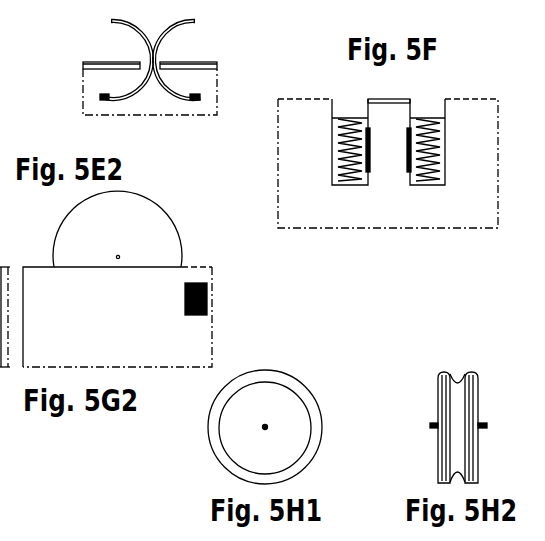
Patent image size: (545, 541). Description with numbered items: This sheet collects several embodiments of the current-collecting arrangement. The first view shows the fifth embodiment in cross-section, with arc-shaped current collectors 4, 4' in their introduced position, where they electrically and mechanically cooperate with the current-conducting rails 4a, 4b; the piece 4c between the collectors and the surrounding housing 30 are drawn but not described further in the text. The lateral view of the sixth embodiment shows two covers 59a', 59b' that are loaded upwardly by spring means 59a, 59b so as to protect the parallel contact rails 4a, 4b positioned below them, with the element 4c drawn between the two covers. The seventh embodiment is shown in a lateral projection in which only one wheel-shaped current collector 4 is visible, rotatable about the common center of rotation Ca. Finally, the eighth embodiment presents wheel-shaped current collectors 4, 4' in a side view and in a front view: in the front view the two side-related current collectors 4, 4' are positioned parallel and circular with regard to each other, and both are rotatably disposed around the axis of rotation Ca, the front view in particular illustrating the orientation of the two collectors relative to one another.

In FIG. 5E2, the current collector 4 is at (118, 50).
In FIG. 5G2, the current collector 4 is at (135, 229).
In FIG. 5H1, the current collector 4 is at (256, 430).
In FIG. 5H2, the current collector 4 is at (437, 414).
In FIG. 5E2, the current collector 4' is at (173, 50).
In FIG. 5H2, the current collector 4' is at (457, 407).
In FIG. 5E2, the current-conducting rail 4a is at (101, 100).
In FIG. 5F, the current-conducting rail 4a is at (370, 162).
In FIG. 5E2, the current-conducting rail 4b is at (199, 100).
In FIG. 5F, the current-conducting rail 4b is at (407, 163).
In FIG. 5E2, the roller connecting web 4c is at (107, 62).
In FIG. 5F, the roller connecting web 4c is at (380, 100).
In FIG. 5E2, the housing 30 is at (213, 94).
In FIG. 5F, the spring means 59a is at (326, 158).
In FIG. 5F, the spring means 59b is at (457, 159).
In FIG. 5F, the cover 59a' is at (329, 127).
In FIG. 5F, the cover 59b' is at (452, 126).
In FIG. 5G2, the axis of rotation Ca is at (121, 256).
In FIG. 5H1, the axis of rotation Ca is at (263, 427).
In FIG. 5H2, the axis of rotation Ca is at (485, 422).